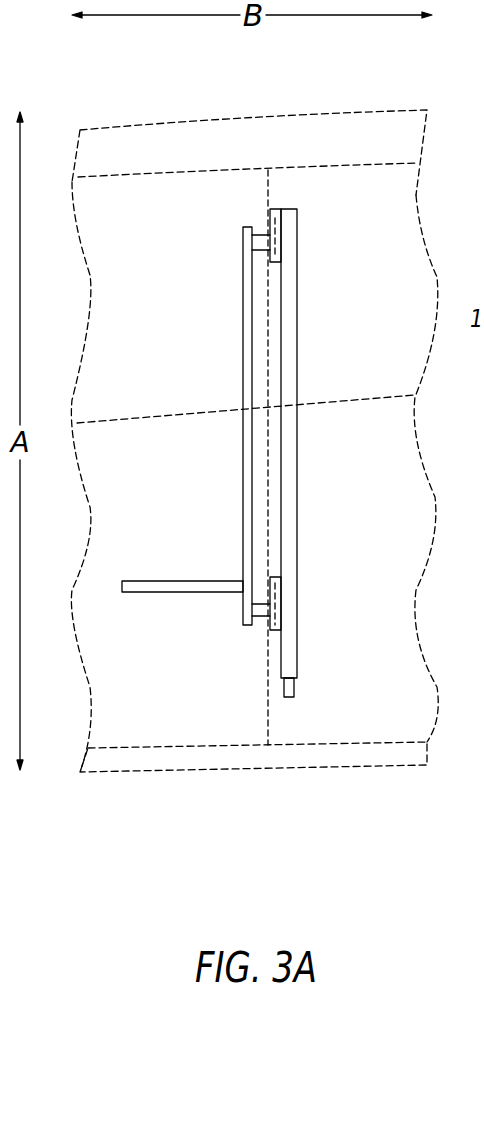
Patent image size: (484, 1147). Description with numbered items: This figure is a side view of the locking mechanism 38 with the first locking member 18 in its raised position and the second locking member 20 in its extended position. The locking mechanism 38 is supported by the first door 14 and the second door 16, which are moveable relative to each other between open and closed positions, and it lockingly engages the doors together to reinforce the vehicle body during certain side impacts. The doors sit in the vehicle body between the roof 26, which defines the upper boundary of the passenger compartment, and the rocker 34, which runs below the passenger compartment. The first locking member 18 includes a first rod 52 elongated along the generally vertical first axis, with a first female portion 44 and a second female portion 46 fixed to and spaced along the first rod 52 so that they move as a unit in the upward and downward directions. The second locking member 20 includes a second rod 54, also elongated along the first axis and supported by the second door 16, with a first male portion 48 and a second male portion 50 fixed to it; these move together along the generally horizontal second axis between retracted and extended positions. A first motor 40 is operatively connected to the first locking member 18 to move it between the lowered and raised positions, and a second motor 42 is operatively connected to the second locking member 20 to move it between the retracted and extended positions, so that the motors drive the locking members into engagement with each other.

The first door 14 is at (407, 257).
The second door 16 is at (127, 278).
The first locking member 18 is at (322, 443).
The second locking member 20 is at (212, 426).
The roof 26 is at (305, 112).
The rocker 34 is at (230, 750).
The locking mechanism 38 is at (322, 210).
The first motor 40 is at (295, 685).
The second motor 42 is at (155, 580).
The first female portion 44 is at (273, 225).
The second female portion 46 is at (280, 585).
The first male portion 48 is at (283, 243).
The second male portion 50 is at (283, 610).
The first rod 52 is at (288, 330).
The second rod 54 is at (247, 333).